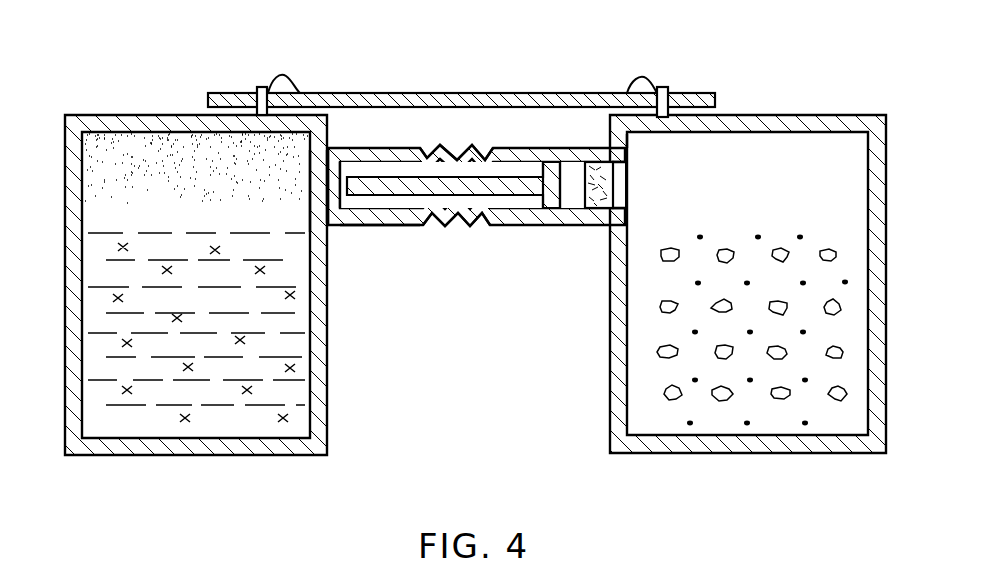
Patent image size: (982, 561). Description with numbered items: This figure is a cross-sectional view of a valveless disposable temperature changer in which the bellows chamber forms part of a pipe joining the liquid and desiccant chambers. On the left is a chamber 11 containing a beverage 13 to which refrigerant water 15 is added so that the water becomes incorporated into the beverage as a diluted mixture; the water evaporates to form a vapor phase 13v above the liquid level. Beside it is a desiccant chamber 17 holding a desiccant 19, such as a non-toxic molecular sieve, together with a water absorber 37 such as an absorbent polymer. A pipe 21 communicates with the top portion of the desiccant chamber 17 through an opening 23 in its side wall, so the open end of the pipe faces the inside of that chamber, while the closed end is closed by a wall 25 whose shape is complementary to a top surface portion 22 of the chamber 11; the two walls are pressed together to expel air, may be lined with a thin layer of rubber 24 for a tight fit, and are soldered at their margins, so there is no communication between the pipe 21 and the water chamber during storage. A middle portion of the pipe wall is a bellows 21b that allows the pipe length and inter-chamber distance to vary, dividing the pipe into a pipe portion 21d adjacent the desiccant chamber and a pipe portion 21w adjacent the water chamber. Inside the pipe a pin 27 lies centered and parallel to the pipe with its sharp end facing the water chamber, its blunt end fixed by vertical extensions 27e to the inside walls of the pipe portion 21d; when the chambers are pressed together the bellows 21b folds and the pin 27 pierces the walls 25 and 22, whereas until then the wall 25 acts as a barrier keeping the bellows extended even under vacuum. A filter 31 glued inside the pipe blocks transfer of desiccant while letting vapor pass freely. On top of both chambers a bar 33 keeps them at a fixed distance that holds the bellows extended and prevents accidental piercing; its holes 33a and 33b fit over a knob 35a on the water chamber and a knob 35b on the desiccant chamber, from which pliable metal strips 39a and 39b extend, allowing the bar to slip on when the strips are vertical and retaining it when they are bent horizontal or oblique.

The chamber 11 is at (330, 412).
The beverage 13 is at (165, 232).
The vapor phase 13v is at (157, 176).
The water 15 is at (237, 338).
The desiccant chamber 17 is at (612, 390).
The desiccant 19 is at (733, 250).
The pipe 21 is at (410, 227).
The pipe portion 21w is at (388, 149).
The bellows 21b is at (465, 232).
The pipe portion 21d is at (597, 160).
The top surface portion 22 is at (310, 197).
The opening 23 is at (632, 168).
The rubber 24 is at (318, 183).
The wall 25 is at (365, 227).
The pin 27 is at (450, 178).
The vertical extensions 27e is at (530, 228).
The filter 31 is at (612, 195).
The bar 33 is at (420, 95).
The hole 33a is at (235, 97).
The hole 33b is at (683, 90).
The knob 35a is at (260, 88).
The knob 35b is at (712, 91).
The water absorber 37 is at (845, 282).
The metal strip 39a is at (287, 77).
The metal strip 39b is at (632, 85).